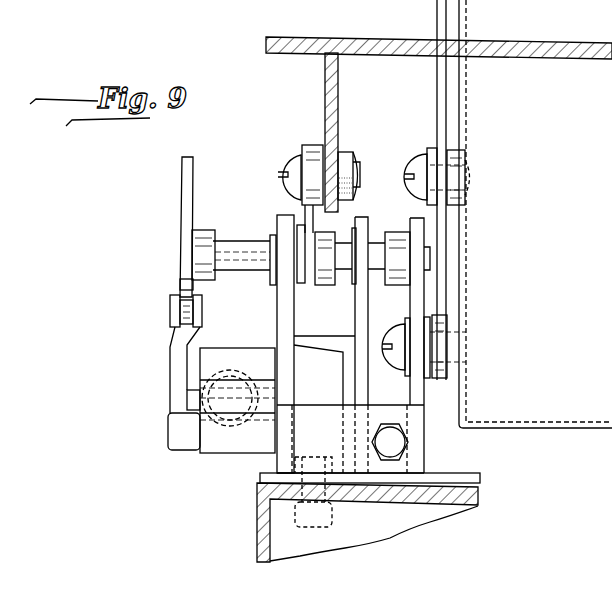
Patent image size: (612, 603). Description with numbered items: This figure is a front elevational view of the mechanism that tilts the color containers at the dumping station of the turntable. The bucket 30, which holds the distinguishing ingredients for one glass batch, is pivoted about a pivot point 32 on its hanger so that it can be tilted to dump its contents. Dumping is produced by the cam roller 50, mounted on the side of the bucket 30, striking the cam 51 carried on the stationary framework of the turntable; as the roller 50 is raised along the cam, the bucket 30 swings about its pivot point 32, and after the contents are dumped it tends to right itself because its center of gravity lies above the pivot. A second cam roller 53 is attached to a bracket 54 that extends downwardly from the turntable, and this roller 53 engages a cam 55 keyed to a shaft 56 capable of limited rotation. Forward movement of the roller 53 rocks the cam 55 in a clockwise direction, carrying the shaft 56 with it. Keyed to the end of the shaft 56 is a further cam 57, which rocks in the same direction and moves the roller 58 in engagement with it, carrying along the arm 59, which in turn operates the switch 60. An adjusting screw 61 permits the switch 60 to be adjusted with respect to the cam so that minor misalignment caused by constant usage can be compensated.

The bucket 30 is at (470, 78).
The pivot point 32 is at (438, 163).
The cam roller 50 is at (423, 381).
The cam 51 is at (418, 312).
The second cam roller 53 is at (309, 148).
The bracket 54 is at (336, 110).
The cam 55 is at (314, 224).
The shaft 56 is at (238, 243).
The cam 57 is at (188, 191).
The roller 58 is at (183, 287).
The arm 59 is at (173, 343).
The switch 60 is at (252, 346).
The adjusting screw 61 is at (408, 447).